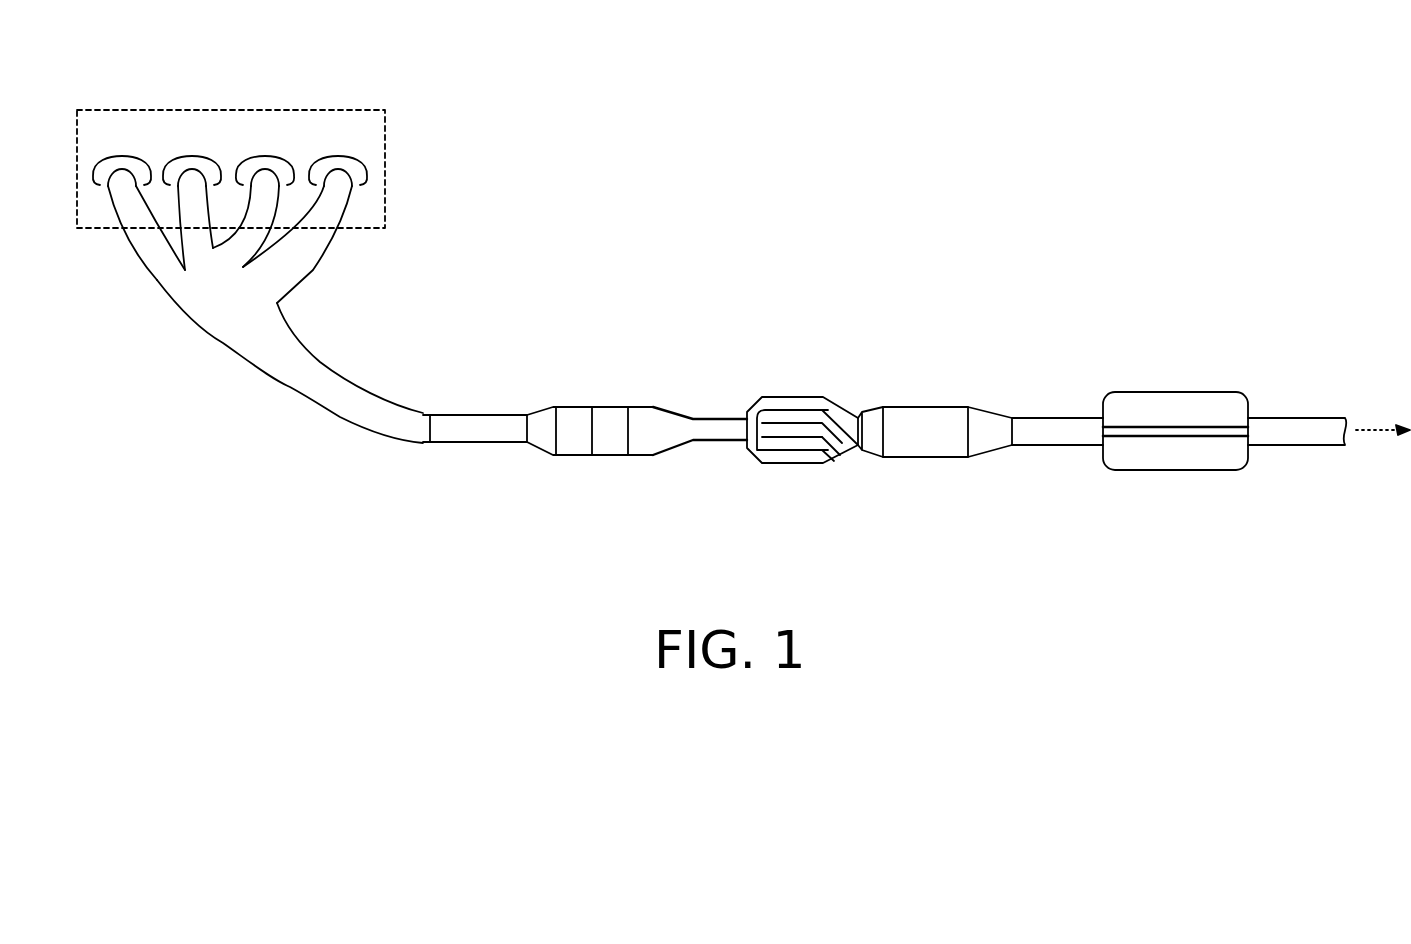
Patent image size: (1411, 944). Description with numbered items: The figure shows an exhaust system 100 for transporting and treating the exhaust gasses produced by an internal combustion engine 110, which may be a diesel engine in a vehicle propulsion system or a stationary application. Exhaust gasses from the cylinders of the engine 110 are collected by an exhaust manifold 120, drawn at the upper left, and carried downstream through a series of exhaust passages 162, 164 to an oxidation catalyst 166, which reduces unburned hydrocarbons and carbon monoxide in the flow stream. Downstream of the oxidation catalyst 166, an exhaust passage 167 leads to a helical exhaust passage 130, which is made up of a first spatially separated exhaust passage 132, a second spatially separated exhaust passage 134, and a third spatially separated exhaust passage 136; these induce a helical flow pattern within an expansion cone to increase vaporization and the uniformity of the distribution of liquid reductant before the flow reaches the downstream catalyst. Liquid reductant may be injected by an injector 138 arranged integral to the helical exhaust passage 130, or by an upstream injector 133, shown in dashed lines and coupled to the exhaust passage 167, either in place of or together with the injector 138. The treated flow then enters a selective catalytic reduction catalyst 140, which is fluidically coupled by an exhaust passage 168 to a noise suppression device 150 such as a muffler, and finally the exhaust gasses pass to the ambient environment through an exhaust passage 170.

The exhaust system 100 is at (230, 502).
The internal combustion engine 110 is at (213, 104).
The exhaust manifold 120 is at (168, 276).
The helical exhaust passage 130 is at (808, 377).
The first spatially separated exhaust passage 132 is at (770, 387).
The upstream injector 133 is at (604, 402).
The second spatially separated exhaust passage 134 is at (812, 412).
The third spatially separated exhaust passage 136 is at (795, 476).
The injector 138 is at (843, 456).
The selective catalytic reduction (SCR) catalyst 140 is at (924, 413).
The noise suppression device 150 is at (1175, 405).
The exhaust passage 162 is at (331, 412).
The exhaust passage 164 is at (481, 443).
The oxidation catalyst 166 is at (573, 406).
The exhaust passage 167 is at (609, 456).
The exhaust passage 168 is at (1059, 436).
The exhaust passage 170 is at (1298, 437).